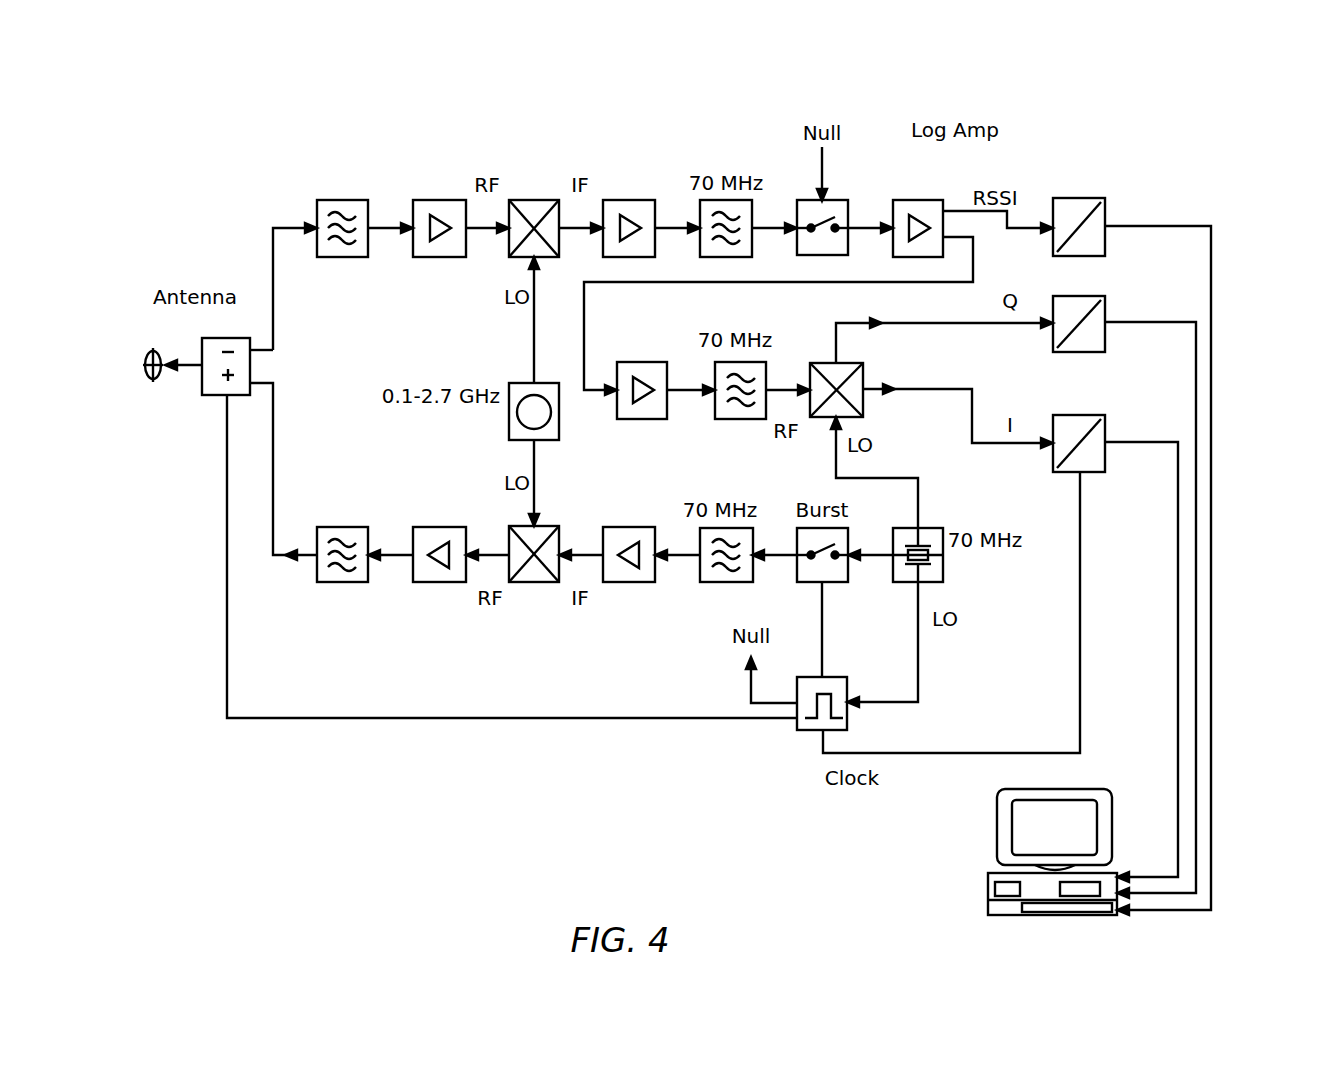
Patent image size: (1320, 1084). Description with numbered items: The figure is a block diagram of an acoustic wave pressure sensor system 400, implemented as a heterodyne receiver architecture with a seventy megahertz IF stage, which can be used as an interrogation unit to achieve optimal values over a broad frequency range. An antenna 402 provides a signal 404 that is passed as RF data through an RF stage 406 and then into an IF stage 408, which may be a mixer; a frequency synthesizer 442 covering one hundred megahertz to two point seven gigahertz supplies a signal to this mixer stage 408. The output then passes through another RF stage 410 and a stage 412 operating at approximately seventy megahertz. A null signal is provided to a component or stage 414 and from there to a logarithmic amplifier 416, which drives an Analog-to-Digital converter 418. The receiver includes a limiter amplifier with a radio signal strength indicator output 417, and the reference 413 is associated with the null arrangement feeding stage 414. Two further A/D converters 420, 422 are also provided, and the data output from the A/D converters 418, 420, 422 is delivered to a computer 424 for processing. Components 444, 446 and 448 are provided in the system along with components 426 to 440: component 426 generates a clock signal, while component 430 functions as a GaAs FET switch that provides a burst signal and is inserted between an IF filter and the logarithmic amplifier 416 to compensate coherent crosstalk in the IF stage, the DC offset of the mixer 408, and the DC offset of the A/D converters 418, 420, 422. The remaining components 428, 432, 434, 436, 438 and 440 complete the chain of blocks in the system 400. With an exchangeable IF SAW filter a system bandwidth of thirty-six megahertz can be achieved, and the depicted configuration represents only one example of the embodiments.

The acoustic wave pressure sensor system 400 is at (1192, 166).
The antenna 402 is at (216, 395).
The signal 404 is at (340, 200).
The RF stage 406 is at (436, 200).
The IF stage 408 is at (534, 200).
The RF stage 410 is at (630, 200).
The stage 412 is at (752, 212).
The null switch arrangement 413 is at (832, 100).
The component or stage 414 is at (836, 200).
The logarithmic amplifier 416 is at (918, 200).
The radio signal strength indicator output 417 is at (1058, 172).
The Analog-to-Digital converter 418 is at (1105, 212).
The A/D converter 420 is at (1105, 308).
The A/D converter 422 is at (1105, 426).
The computer 424 is at (980, 860).
The component 426 is at (810, 730).
The component 428 is at (943, 572).
The switch 430 is at (838, 582).
The component 432 is at (712, 582).
The component 434 is at (621, 582).
The component 436 is at (534, 582).
The component 438 is at (436, 582).
The component 440 is at (340, 582).
The frequency synthesizer 442 is at (509, 430).
The component 444 is at (647, 419).
The component 446 is at (742, 419).
The component 448 is at (863, 405).